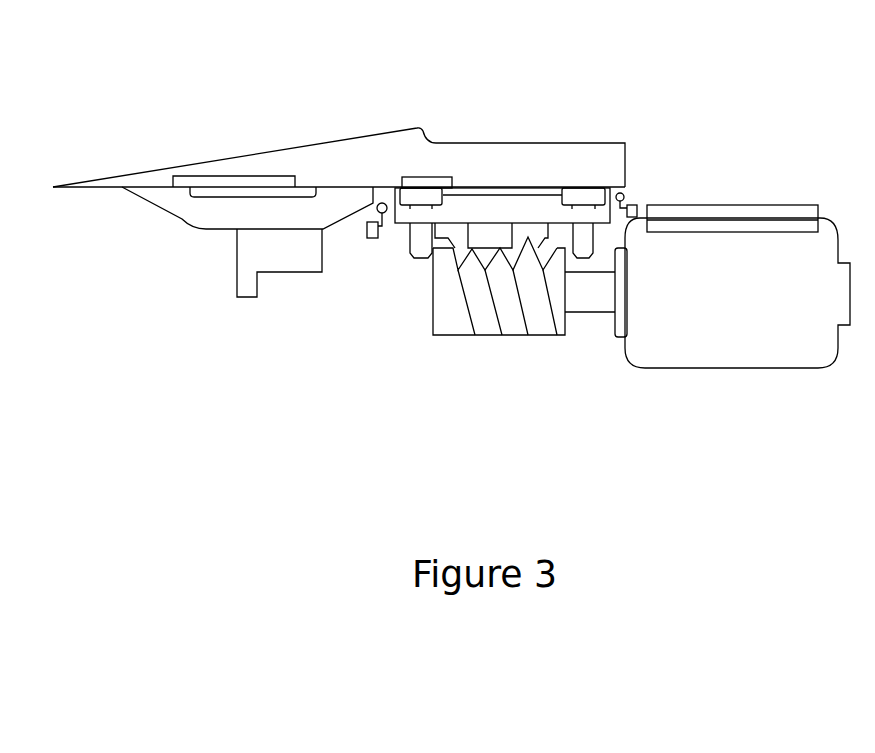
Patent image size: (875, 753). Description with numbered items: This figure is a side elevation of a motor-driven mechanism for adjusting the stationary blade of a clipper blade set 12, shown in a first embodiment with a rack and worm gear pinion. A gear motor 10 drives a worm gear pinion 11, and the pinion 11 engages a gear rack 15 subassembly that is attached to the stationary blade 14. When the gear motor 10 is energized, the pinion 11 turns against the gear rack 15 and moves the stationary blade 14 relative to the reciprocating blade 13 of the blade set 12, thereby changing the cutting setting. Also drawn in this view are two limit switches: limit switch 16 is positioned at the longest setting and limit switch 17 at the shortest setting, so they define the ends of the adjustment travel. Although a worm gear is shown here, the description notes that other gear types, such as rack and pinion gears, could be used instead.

The gear motor 10 is at (713, 374).
The worm gear pinion 11 is at (494, 339).
The blade set 12 is at (392, 96).
The reciprocating blade 13 is at (179, 224).
The stationary blade 14 is at (267, 146).
The gear rack 15 is at (494, 188).
The limit switch 16 is at (369, 244).
The limit switch 17 is at (634, 199).